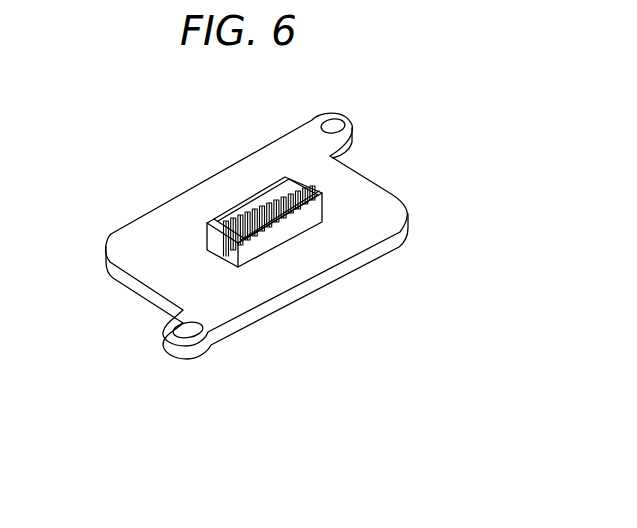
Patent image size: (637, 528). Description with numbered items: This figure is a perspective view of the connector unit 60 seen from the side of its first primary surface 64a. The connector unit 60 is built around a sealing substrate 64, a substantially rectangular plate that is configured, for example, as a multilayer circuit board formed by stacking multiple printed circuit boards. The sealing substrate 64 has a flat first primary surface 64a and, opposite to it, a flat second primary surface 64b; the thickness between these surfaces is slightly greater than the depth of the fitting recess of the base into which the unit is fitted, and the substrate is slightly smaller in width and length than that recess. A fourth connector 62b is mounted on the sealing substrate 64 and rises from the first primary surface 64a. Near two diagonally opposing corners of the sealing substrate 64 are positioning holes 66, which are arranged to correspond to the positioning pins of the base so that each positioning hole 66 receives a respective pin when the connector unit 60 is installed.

The connector unit 60 is at (138, 179).
The fourth connector 62b is at (252, 203).
The sealing substrate 64 is at (128, 249).
The first primary surface 64a is at (338, 248).
The second primary surface 64b is at (305, 298).
The positioning holes 66 is at (334, 124).